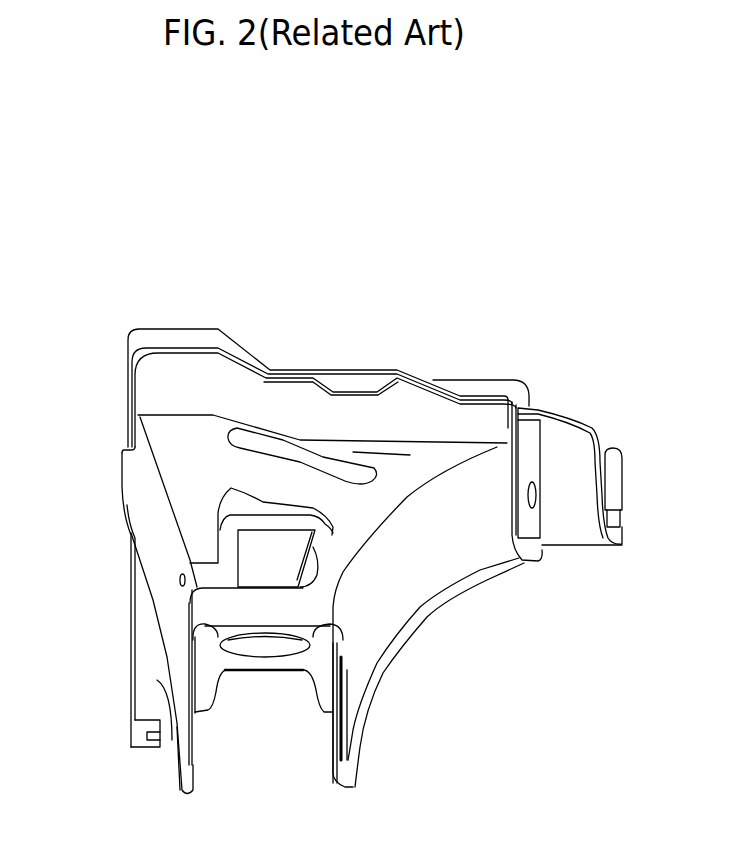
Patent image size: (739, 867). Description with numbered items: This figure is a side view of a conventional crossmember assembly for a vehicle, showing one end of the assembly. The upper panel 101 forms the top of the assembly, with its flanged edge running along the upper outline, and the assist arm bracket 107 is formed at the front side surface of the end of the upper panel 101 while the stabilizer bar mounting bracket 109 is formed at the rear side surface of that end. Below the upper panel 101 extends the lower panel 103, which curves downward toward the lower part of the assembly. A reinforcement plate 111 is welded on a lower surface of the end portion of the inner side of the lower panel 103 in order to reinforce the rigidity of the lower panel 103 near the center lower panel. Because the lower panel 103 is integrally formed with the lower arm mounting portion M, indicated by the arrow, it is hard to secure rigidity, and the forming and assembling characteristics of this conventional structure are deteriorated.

The upper panel 101 is at (181, 340).
The lower panel 103 is at (405, 567).
The assist arm bracket 107 is at (567, 463).
The stabilizer bar mounting bracket 109 is at (148, 641).
The reinforcement plate 111 is at (242, 660).
The lower arm mounting portion M is at (273, 682).